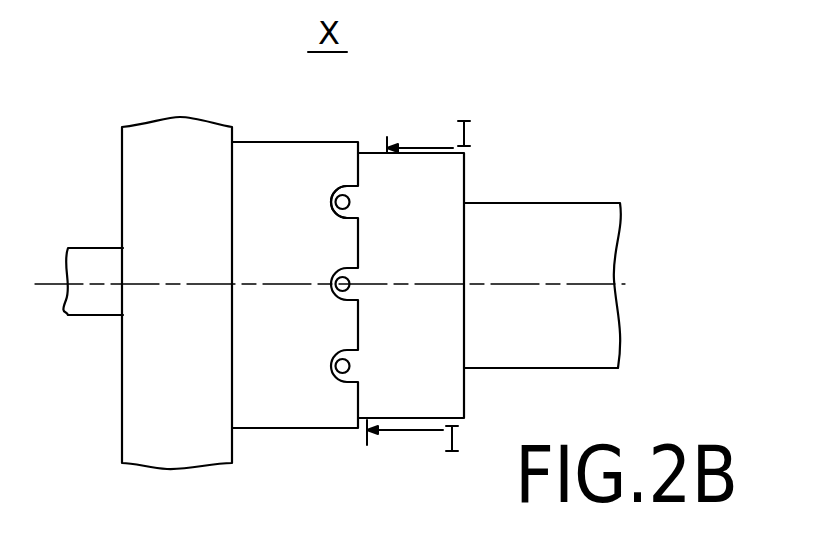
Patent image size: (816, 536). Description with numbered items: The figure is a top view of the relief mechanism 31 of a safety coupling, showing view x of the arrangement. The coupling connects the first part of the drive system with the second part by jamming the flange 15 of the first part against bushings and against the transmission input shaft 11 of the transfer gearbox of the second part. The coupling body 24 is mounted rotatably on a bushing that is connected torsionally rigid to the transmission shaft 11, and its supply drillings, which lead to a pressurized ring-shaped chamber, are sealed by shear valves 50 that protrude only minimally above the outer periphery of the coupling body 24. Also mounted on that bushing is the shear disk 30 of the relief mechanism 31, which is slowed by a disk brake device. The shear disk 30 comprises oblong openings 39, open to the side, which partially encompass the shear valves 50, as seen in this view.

The transmission input shaft 11 is at (106, 267).
The flange 15 is at (552, 210).
The coupling body 24 is at (432, 258).
The shear disk 30 is at (272, 177).
The relief mechanism 31 is at (184, 110).
The oblong openings 39 is at (331, 193).
The shear valves 50 is at (350, 198).